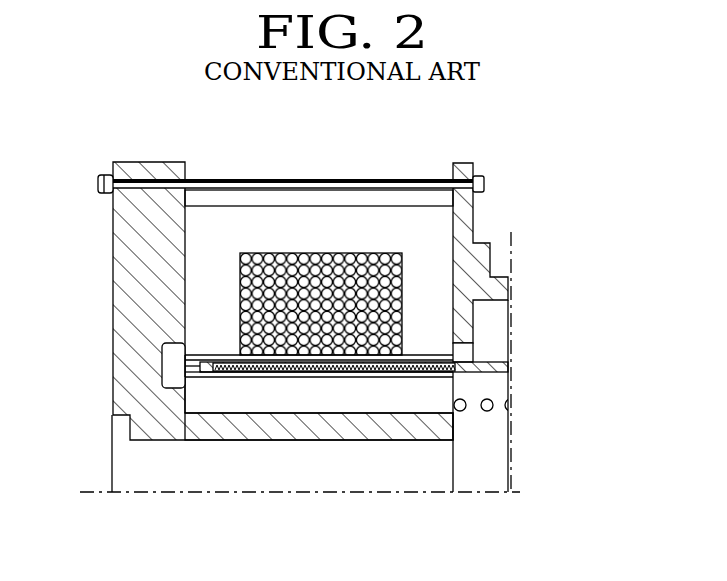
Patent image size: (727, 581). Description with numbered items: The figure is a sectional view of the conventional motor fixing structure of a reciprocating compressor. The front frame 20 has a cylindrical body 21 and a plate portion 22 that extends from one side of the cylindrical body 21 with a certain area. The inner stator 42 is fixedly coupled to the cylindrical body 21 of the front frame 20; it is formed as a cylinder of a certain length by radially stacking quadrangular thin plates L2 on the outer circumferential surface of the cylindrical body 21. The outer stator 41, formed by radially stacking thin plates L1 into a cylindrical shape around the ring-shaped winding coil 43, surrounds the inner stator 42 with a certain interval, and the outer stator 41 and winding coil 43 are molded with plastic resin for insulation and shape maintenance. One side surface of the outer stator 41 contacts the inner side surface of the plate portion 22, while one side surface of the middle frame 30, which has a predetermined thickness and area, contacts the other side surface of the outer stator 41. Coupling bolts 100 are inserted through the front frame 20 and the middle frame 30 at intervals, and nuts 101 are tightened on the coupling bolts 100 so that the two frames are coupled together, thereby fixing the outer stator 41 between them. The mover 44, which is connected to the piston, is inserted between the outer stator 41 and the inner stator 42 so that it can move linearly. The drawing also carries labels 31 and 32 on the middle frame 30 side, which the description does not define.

The front frame 20 is at (100, 349).
The cylindrical body 21 is at (272, 430).
The plate portion 22 is at (135, 263).
The middle frame 30 is at (484, 212).
The partition plate 31 is at (462, 352).
The upper side wall 32 is at (450, 178).
The outer stator 41 is at (251, 205).
The inner stator 42 is at (218, 413).
The winding coil 43 is at (322, 253).
The mover 44 is at (216, 382).
The coupling bolts 100 is at (384, 179).
The nuts 101 is at (105, 178).
The thin plates L1 is at (440, 285).
The thin plates L2 is at (440, 393).